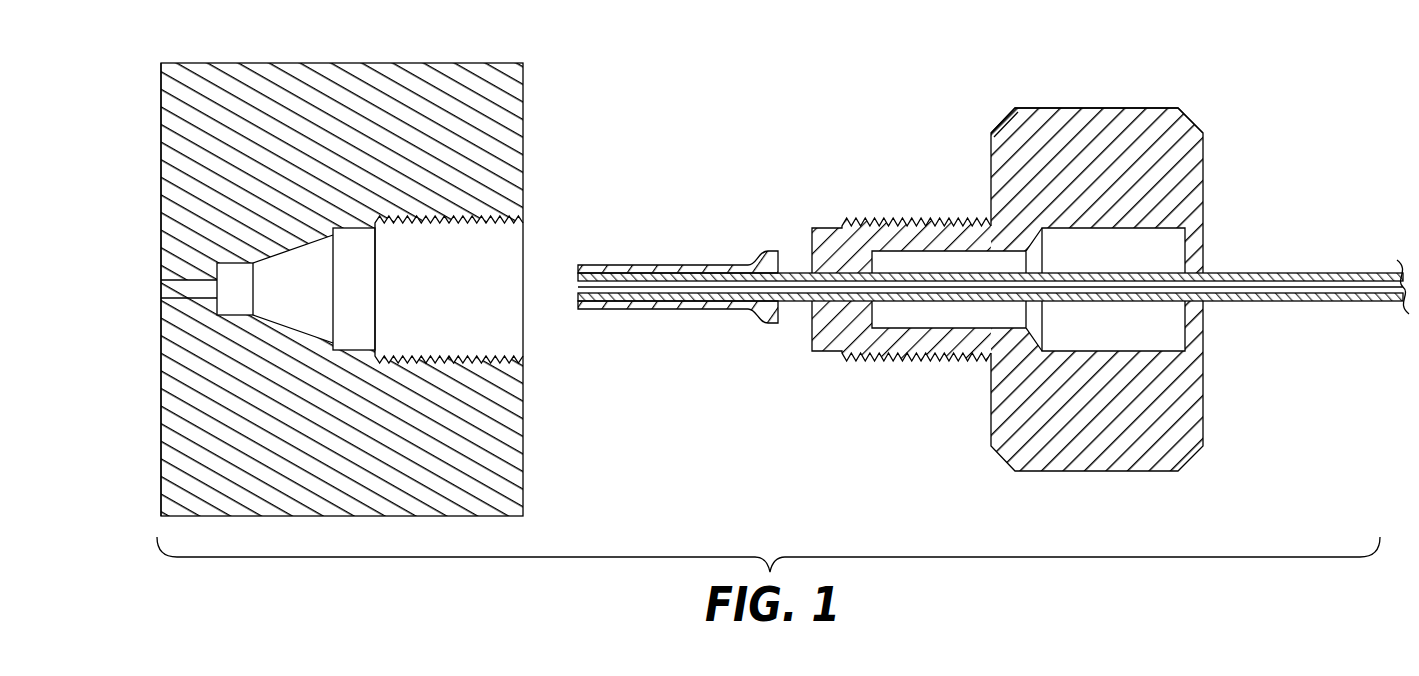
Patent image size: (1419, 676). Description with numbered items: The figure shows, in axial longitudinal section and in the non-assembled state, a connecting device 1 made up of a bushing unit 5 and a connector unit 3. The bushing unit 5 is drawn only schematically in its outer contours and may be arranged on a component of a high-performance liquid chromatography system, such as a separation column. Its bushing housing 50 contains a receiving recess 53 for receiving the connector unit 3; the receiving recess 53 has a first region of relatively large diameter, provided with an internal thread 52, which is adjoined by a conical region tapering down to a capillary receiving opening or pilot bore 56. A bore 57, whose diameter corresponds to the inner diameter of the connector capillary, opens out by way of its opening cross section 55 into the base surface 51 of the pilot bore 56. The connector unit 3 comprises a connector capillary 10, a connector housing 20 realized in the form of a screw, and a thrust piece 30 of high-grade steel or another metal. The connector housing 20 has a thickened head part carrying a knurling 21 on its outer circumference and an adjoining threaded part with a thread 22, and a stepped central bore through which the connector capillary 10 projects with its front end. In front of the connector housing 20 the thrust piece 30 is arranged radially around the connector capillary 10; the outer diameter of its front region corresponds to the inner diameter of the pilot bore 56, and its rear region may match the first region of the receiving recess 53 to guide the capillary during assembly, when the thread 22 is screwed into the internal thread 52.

The connecting device 1 is at (751, 260).
The connector unit 3 is at (910, 277).
The bushing unit 5 is at (349, 260).
The connector capillary 10 is at (1332, 272).
The connector housing 20 is at (1117, 263).
The knurling 21 is at (1092, 107).
The thread 22 is at (890, 217).
The thrust piece 30 is at (680, 265).
The bushing housing 50 is at (503, 190).
The base surface 51 is at (200, 262).
The internal thread 52 is at (463, 362).
The receiving recess 53 is at (488, 319).
The opening cross section 55 is at (228, 314).
The pilot bore 56 is at (237, 262).
The bore 57 is at (185, 292).